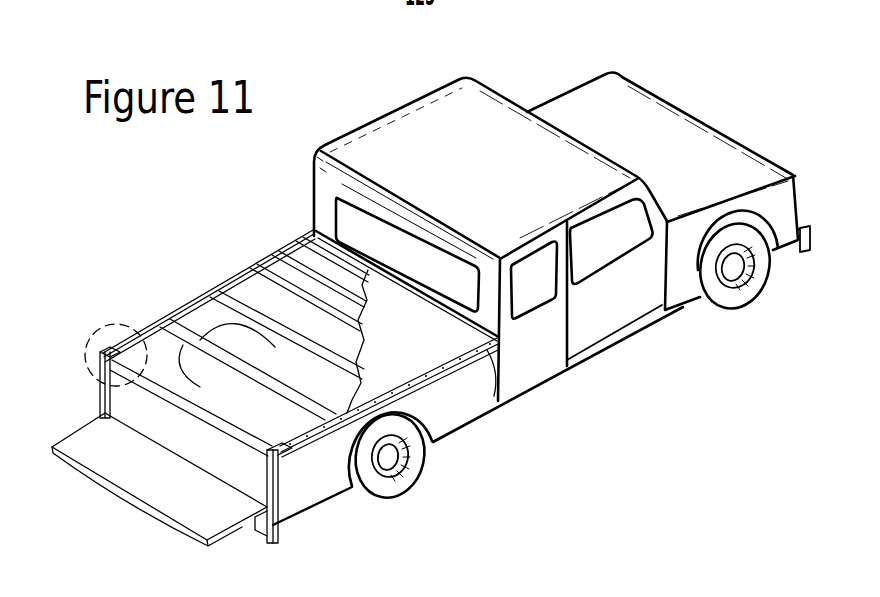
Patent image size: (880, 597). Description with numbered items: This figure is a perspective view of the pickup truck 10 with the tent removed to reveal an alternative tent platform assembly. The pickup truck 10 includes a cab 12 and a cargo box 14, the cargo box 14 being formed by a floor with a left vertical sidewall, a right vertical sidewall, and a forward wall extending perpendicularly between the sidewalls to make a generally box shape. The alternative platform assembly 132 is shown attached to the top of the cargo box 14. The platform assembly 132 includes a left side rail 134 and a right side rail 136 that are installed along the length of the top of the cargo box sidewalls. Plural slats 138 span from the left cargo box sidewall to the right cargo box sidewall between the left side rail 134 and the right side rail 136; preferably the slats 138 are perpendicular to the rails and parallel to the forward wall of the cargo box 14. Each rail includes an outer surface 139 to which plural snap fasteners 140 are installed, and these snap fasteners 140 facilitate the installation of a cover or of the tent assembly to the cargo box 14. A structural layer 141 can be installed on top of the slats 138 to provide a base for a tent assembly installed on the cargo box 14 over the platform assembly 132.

The pickup truck 10 is at (513, 75).
The cab 12 is at (90, 345).
The cargo box 14 is at (451, 432).
The platform assembly 132 is at (182, 308).
The left side rail 134 is at (106, 350).
The right side rail 136 is at (320, 434).
The slats 138 is at (265, 266).
The outer surface 139 is at (299, 441).
The snap fasteners 140 is at (494, 396).
The structural layer 141 is at (415, 346).